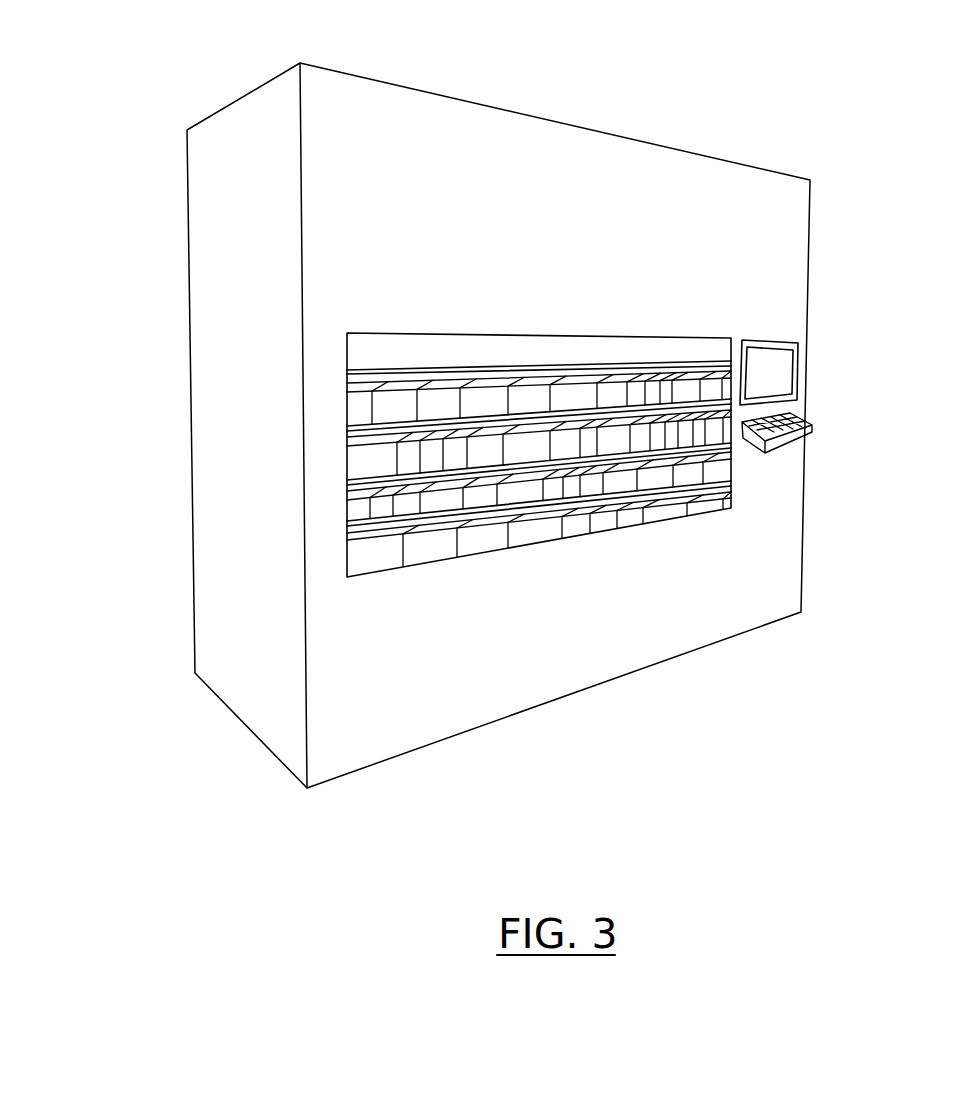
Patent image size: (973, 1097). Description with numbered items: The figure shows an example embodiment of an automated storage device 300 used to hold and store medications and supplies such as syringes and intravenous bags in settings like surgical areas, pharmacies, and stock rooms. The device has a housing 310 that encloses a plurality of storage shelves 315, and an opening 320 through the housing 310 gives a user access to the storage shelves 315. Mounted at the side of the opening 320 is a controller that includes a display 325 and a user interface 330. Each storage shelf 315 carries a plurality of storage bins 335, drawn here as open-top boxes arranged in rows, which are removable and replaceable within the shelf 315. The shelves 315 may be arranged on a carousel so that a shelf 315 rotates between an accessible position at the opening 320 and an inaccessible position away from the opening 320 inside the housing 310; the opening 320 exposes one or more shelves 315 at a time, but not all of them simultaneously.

The automated storage device 300 is at (168, 96).
The housing 310 is at (208, 335).
The storage shelves 315 is at (347, 530).
The opening 320 is at (372, 345).
The display 325 is at (782, 368).
The user interface 330 is at (805, 412).
The storage bins 335 is at (578, 532).